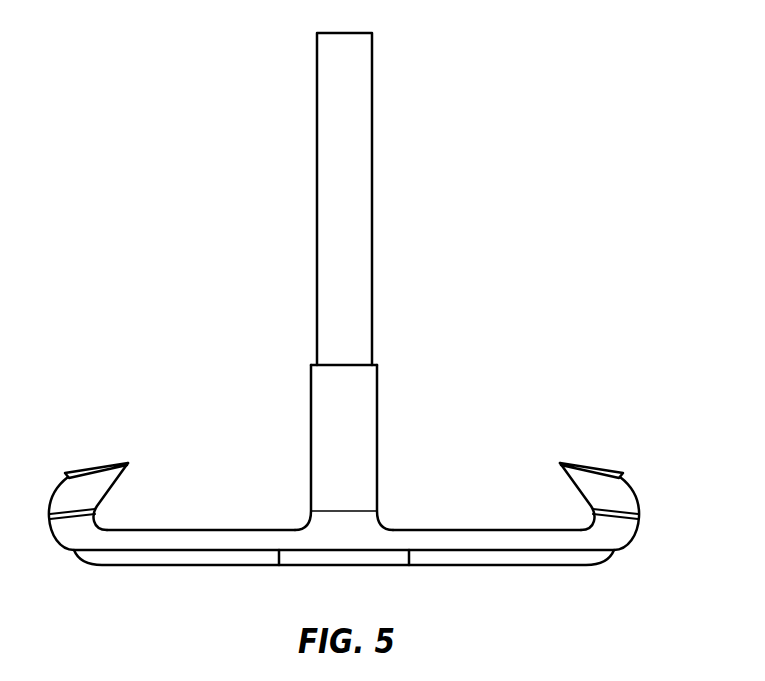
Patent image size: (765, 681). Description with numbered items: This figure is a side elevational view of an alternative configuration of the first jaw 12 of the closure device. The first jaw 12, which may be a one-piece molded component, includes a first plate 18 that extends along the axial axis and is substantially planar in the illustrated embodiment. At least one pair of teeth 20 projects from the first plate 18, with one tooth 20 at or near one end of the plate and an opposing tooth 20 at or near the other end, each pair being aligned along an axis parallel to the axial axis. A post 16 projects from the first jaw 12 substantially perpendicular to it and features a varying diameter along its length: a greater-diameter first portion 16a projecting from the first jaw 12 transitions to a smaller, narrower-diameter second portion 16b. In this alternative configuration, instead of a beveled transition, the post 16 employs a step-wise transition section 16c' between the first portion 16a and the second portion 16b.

The first jaw 12 is at (344, 494).
The post 16 is at (347, 281).
The first portion 16a is at (378, 430).
The second portion 16b is at (317, 150).
The step-wise transition section 16c' is at (393, 338).
The first plate 18 is at (218, 530).
The teeth 20 is at (100, 463).